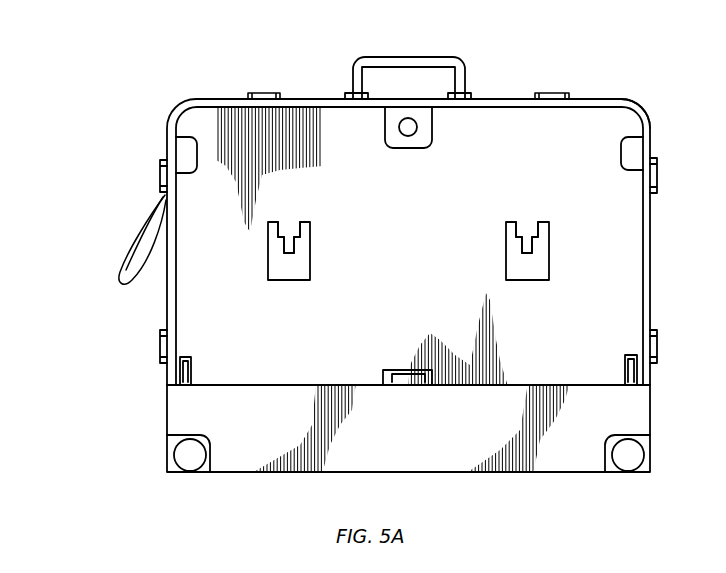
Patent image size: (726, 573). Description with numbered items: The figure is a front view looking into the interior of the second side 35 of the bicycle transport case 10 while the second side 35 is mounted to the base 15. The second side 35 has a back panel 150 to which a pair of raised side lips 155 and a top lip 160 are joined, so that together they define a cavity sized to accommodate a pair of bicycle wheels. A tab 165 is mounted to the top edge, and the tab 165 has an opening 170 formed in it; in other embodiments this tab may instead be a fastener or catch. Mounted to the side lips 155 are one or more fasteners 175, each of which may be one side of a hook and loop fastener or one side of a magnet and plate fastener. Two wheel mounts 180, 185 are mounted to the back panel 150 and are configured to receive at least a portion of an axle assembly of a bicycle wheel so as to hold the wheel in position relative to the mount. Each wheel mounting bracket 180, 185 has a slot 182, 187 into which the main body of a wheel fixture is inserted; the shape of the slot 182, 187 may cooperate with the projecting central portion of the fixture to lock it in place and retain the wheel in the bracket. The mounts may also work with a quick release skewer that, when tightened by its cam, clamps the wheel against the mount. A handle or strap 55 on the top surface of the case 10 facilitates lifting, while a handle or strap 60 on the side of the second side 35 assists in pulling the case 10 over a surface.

The bicycle transport case 10 is at (178, 92).
The base 15 is at (620, 406).
The second side 35 is at (640, 118).
The handle or strap 55 is at (386, 57).
The handle or strap 60 is at (128, 262).
The back panel 150 is at (597, 218).
The raised side lips 155 is at (174, 306).
The top lip 160 is at (500, 102).
The tab 165 is at (404, 144).
The opening 170 is at (407, 136).
The fasteners 175 is at (192, 370).
The wheel mount 180 is at (298, 282).
The slot 182 is at (290, 236).
The wheel mount 185 is at (506, 255).
The slot 187 is at (528, 236).